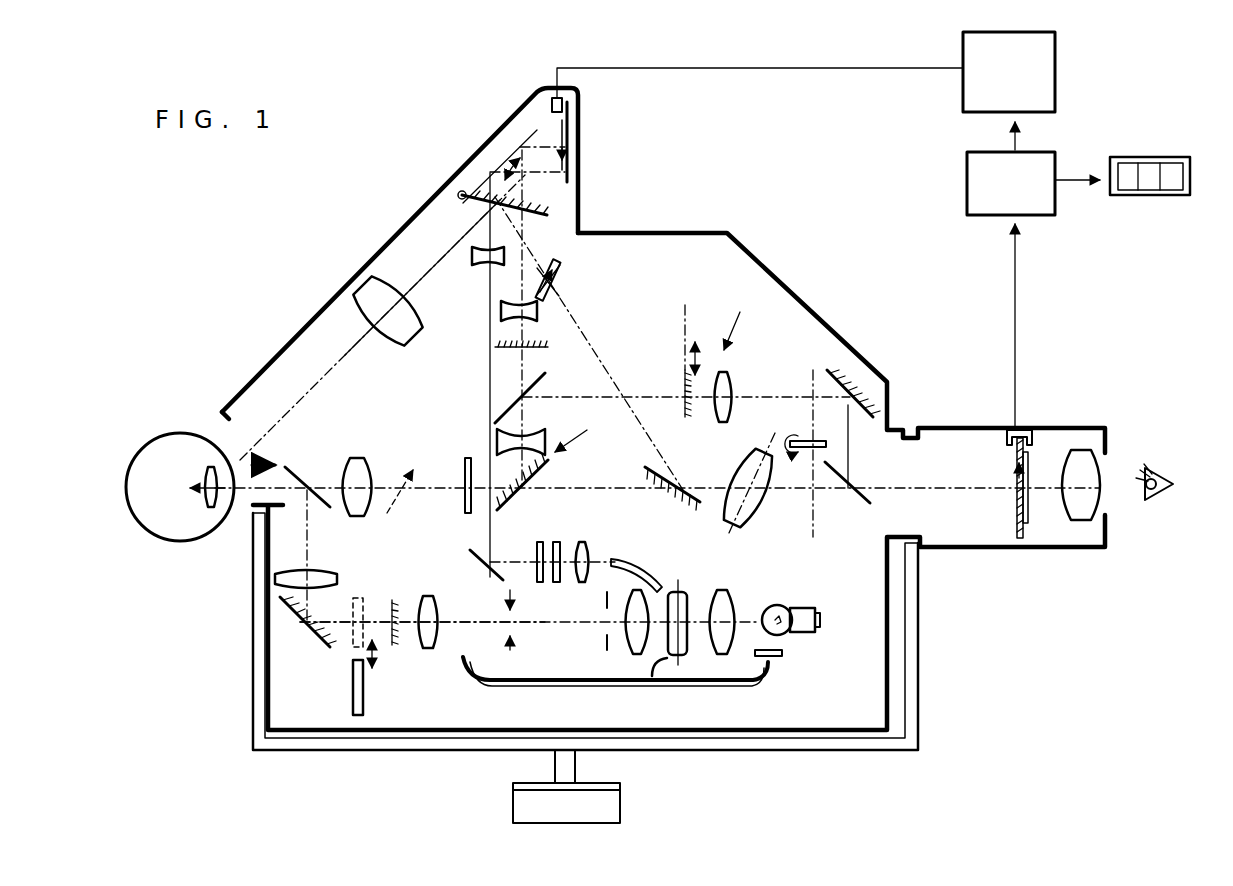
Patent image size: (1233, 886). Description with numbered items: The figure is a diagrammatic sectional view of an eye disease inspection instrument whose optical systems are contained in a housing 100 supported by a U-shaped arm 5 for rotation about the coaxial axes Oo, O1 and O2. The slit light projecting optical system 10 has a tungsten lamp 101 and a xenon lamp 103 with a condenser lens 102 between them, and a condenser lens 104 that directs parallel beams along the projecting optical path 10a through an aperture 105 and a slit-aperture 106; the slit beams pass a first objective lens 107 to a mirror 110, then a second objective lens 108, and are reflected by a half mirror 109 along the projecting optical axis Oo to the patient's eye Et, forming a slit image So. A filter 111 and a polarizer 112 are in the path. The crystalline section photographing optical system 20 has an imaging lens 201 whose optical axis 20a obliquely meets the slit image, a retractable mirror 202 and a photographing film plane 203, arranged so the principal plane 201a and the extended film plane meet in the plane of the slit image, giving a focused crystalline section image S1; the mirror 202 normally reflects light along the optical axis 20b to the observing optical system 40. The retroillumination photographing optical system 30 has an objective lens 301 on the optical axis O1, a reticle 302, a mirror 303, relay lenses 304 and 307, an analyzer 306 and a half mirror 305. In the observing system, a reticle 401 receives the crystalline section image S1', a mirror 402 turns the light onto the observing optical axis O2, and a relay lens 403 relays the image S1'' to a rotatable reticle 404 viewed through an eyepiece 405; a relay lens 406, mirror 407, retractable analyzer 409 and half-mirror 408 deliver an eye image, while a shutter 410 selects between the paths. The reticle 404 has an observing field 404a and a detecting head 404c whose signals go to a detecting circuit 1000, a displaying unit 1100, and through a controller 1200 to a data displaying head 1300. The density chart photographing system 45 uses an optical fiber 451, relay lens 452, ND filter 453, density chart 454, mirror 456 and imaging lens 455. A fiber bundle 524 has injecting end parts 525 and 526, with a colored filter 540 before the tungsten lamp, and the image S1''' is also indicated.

The U-shaped arm 5 is at (918, 643).
The slit light projecting optical system 10 is at (809, 666).
The projecting optical path 10a is at (545, 616).
The crystalline section photographing optical system 20 is at (318, 338).
The optical axis 20a is at (340, 379).
The optical axis 20b is at (617, 375).
The retroillumination photographing optical system 30 is at (588, 436).
The observing optical system 40 is at (737, 315).
The density chart photographing system 45 is at (474, 290).
The housing 100 is at (795, 296).
The tungsten lamp 101 is at (783, 607).
The condenser lens 102 is at (725, 592).
The xenon lamp 103 is at (682, 592).
The condenser lens 104 is at (640, 592).
The aperture 105 is at (612, 660).
The slit-aperture 106 is at (512, 650).
The first objective lens 107 is at (428, 648).
The second objective lens 108 is at (320, 572).
The half mirror 109 is at (305, 470).
The mirror 110 is at (312, 632).
The filter 111 is at (366, 690).
The polarizer 112 is at (393, 600).
The imaging lens 201 is at (350, 312).
The principal plane 201a is at (358, 292).
The retractable mirror 202 is at (462, 190).
The photographing film plane 203 is at (580, 108).
The objective lens 301 is at (357, 457).
The reticle 302 is at (468, 515).
The mirror 303 is at (548, 478).
The relay lens 304 is at (535, 438).
The half mirror 305 is at (543, 375).
The analyzer 306 is at (493, 347).
The relay lens 307 is at (502, 311).
The reticle 401 is at (562, 276).
The mirror 402 is at (665, 472).
The relay lens 403 is at (762, 524).
The rotatable reticle 404 is at (1033, 521).
The observing field 404a is at (1030, 460).
The detecting head 404c is at (1030, 430).
The eyepiece 405 is at (1088, 500).
The relay lens 406 is at (735, 385).
The mirror 407 is at (868, 375).
The half-mirror 408 is at (858, 506).
The analyzer 409 is at (687, 420).
The shutter 410 is at (828, 446).
The optical fiber 451 is at (625, 555).
The relay lens 452 is at (585, 548).
The ND filter 453 is at (557, 542).
The density chart 454 is at (538, 550).
The imaging lens 455 is at (475, 254).
The mirror 456 is at (478, 580).
The fiber bundle 524 is at (548, 686).
The light injecting end part 525 is at (665, 680).
The light injecting end part 526 is at (770, 686).
The colored filter 540 is at (785, 653).
The detecting circuit 1000 is at (1056, 150).
The displaying unit 1100 is at (1183, 157).
The controller 1200 is at (1056, 84).
The data displaying head 1300 is at (552, 103).
The patient's eye Et is at (150, 512).
The slit image So is at (222, 465).
The projecting optical axis Oo is at (250, 493).
The optical axis O1 is at (384, 497).
The observing optical axis O2 is at (905, 485).
The crystalline section image S1 is at (560, 146).
The crystalline section image S1' is at (554, 246).
The image S1'' is at (989, 459).
The conjugate surface S1''' is at (412, 468).